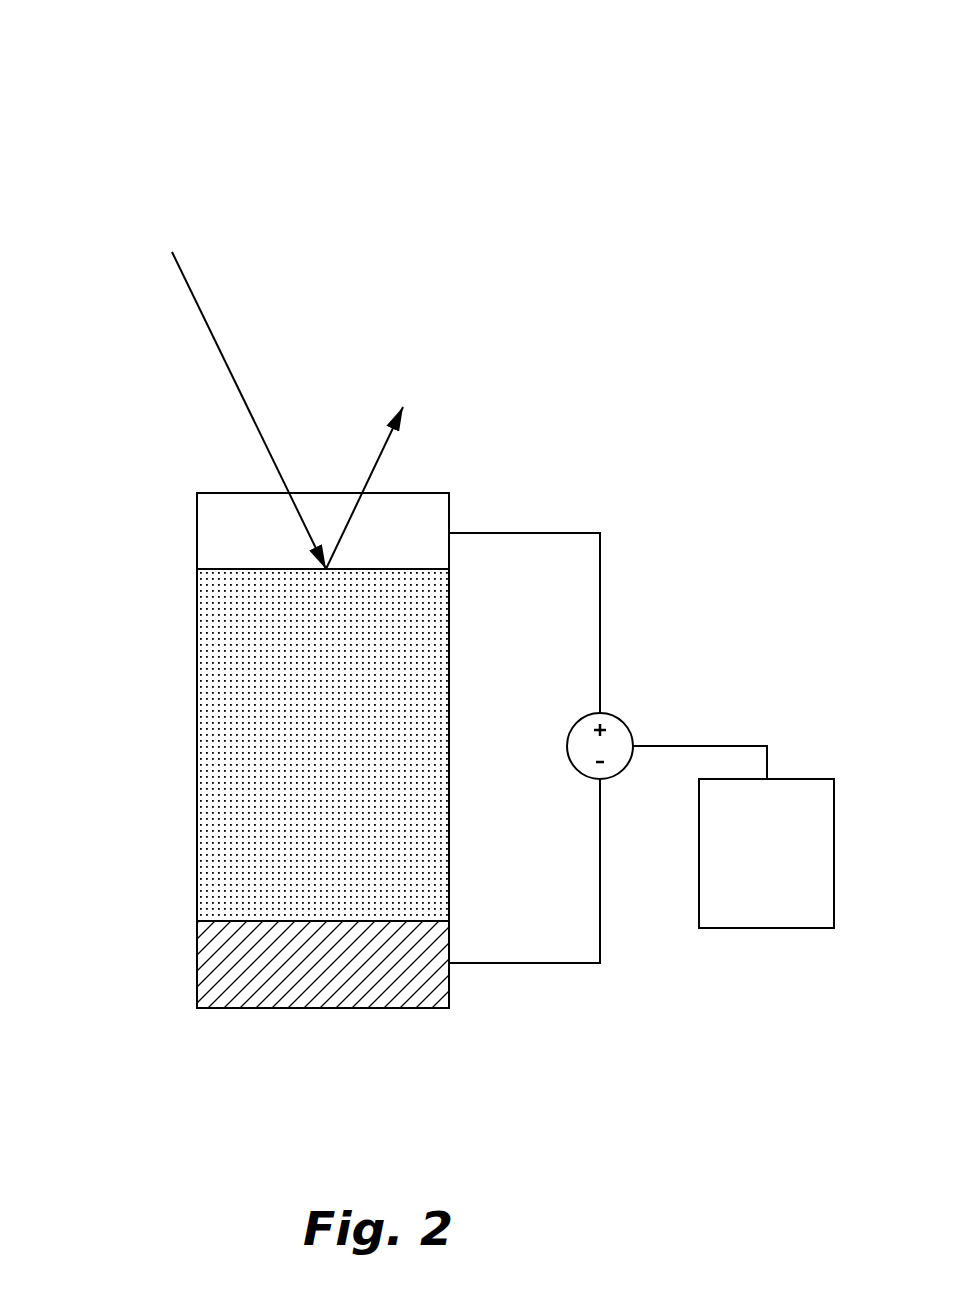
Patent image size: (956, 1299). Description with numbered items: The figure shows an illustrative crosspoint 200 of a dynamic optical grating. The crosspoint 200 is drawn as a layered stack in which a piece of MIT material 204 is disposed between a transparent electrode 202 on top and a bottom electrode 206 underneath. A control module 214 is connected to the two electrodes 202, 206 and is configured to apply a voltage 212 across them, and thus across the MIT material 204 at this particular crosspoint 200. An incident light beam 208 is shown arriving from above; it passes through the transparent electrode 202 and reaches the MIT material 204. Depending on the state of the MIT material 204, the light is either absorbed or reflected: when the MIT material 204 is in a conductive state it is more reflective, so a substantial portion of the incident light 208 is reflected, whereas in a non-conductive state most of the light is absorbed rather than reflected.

The crosspoint 200 is at (155, 162).
The transparent electrode 202 is at (184, 493).
The MIT material 204 is at (184, 569).
The bottom electrode 206 is at (184, 921).
The incident light beam 208 is at (228, 367).
The voltage 212 is at (618, 716).
The control module 214 is at (788, 867).